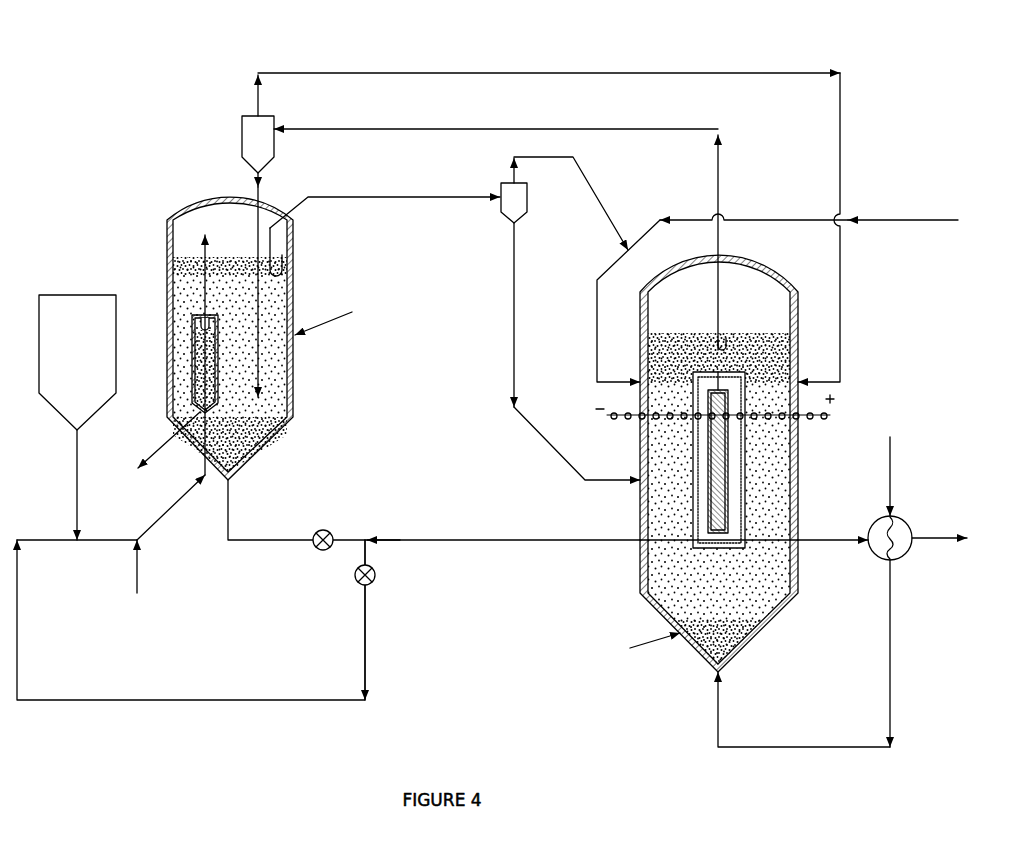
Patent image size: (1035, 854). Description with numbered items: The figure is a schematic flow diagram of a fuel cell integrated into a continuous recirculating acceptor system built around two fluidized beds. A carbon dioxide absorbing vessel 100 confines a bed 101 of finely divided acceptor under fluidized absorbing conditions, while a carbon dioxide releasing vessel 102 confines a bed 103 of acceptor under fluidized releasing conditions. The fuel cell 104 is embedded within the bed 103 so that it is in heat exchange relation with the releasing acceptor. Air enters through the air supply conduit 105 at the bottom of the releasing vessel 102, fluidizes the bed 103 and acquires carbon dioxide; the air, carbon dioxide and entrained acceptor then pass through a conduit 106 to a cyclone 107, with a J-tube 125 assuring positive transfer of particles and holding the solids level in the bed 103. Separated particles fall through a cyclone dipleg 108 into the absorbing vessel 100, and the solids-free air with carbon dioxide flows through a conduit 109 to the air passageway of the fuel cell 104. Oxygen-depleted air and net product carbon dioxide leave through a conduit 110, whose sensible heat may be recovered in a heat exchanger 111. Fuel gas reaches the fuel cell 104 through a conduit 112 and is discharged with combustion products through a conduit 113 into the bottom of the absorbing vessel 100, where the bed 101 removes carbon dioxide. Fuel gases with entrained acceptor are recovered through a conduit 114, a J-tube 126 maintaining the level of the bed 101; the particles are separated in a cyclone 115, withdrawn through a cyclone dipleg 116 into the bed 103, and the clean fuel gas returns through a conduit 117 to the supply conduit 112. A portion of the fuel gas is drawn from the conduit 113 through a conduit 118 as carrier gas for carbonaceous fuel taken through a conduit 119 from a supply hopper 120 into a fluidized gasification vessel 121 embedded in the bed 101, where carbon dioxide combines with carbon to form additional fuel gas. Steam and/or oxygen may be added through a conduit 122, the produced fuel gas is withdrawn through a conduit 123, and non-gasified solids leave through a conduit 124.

The carbon dioxide absorbing vessel 100 is at (167, 262).
The bed of acceptor 101 is at (247, 440).
The carbon dioxide releasing vessel 102 is at (797, 453).
The bed of acceptor 103 is at (705, 605).
The fuel cell 104 is at (708, 438).
The air supply conduit 105 is at (893, 460).
The conduit 106 is at (722, 151).
The cyclone 107 is at (242, 142).
The cyclone dipleg 108 is at (257, 181).
The conduit 109 is at (403, 73).
The conduit 110 is at (843, 540).
The heat exchanger 111 is at (889, 558).
The fuel gas supply conduit 112 is at (873, 220).
The conduit 113 is at (530, 540).
The conduit 114 is at (385, 200).
The cyclone 115 is at (528, 200).
The cyclone dipleg 116 is at (515, 346).
The conduit 117 is at (586, 162).
The conduit 118 is at (43, 541).
The conduit 119 is at (76, 452).
The carbonaceous solid fuel supply hopper 120 is at (57, 411).
The fluidized gasification vessel 121 is at (206, 368).
The conduit 122 is at (140, 567).
The conduit 123 is at (205, 268).
The conduit 124 is at (172, 444).
The J-tube 125 is at (725, 346).
The J-tube 126 is at (281, 277).